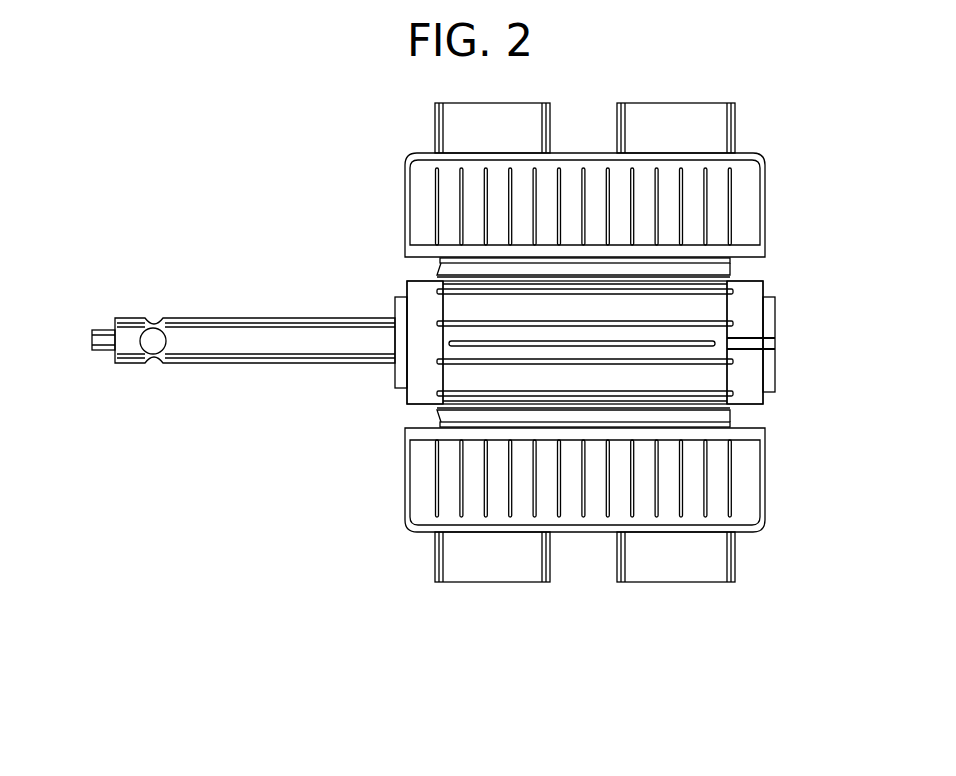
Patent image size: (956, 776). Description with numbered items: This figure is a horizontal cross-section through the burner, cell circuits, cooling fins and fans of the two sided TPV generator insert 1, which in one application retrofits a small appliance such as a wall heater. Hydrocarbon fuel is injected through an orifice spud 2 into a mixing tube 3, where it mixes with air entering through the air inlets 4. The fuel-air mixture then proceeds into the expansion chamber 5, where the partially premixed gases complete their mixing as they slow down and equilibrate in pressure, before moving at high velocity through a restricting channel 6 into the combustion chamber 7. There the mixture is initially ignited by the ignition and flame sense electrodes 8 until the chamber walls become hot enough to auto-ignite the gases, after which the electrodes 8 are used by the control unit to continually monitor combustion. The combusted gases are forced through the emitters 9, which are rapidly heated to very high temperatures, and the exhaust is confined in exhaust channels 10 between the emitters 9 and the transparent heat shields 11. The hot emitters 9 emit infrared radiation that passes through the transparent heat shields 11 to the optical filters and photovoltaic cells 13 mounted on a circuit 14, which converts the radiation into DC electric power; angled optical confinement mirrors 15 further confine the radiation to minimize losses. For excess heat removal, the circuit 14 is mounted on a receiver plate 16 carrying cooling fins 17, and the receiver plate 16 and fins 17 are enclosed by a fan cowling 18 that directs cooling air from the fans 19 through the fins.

The two sided TPV generator insert 1 is at (166, 127).
The orifice spud 2 is at (102, 330).
The mixing tube 3 is at (265, 333).
The air inlets 4 is at (152, 328).
The expansion chamber 5 is at (770, 375).
The restricting channel 6 is at (468, 365).
The combustion chamber 7 is at (450, 343).
The ignition and flame sense electrodes 8 is at (745, 350).
The emitters 9 is at (458, 333).
The exhaust channels 10 is at (457, 323).
The transparent heat shields 11 is at (458, 305).
The optical filters and photovoltaic cells 13 is at (710, 260).
The circuit 14 is at (727, 272).
The angled optical confinement mirrors 15 is at (723, 275).
The receiver plate 16 is at (440, 252).
The cooling fins 17 is at (433, 197).
The fan cowling 18 is at (415, 156).
The fans 19 is at (647, 112).